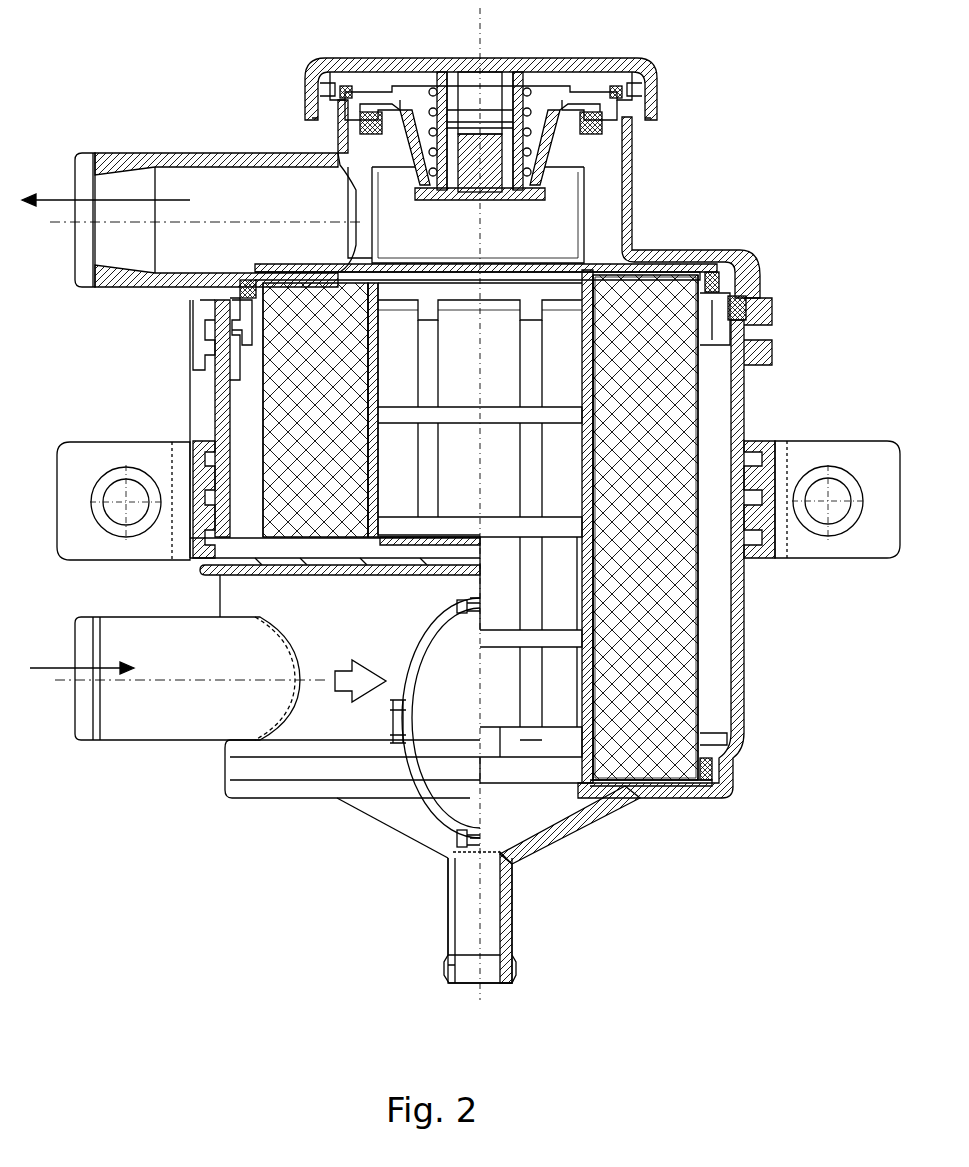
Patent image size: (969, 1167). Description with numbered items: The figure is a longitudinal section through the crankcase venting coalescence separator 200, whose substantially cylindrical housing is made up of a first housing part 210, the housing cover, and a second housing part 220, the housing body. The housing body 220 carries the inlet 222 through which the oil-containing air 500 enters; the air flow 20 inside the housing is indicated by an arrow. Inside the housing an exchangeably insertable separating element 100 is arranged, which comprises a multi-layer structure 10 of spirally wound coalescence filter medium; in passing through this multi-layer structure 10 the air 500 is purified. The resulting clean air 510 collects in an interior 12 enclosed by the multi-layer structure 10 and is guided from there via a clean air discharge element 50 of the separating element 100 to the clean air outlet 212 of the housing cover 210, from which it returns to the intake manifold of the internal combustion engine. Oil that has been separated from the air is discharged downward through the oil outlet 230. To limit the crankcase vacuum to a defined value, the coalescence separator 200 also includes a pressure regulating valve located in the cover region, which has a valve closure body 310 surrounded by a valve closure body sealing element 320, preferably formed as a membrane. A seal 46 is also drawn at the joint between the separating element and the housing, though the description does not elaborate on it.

The coalescence separator 200 is at (130, 80).
The first housing part 210 is at (172, 145).
The clean air 510 is at (68, 200).
The clean air outlet 212 is at (150, 256).
The valve closure body sealing element 320 is at (386, 133).
The clean air discharge element 50 is at (450, 246).
The valve closure body 310 is at (541, 175).
The seal 46 is at (244, 325).
The separating element 100 is at (250, 416).
The interior 12 is at (470, 366).
The multi-layer structure 10 is at (672, 480).
The second housing part 220 is at (745, 612).
The oil-containing air 500 is at (45, 668).
The inlet 222 is at (222, 648).
The air flow 20 is at (358, 655).
The oil outlet 230 is at (480, 965).